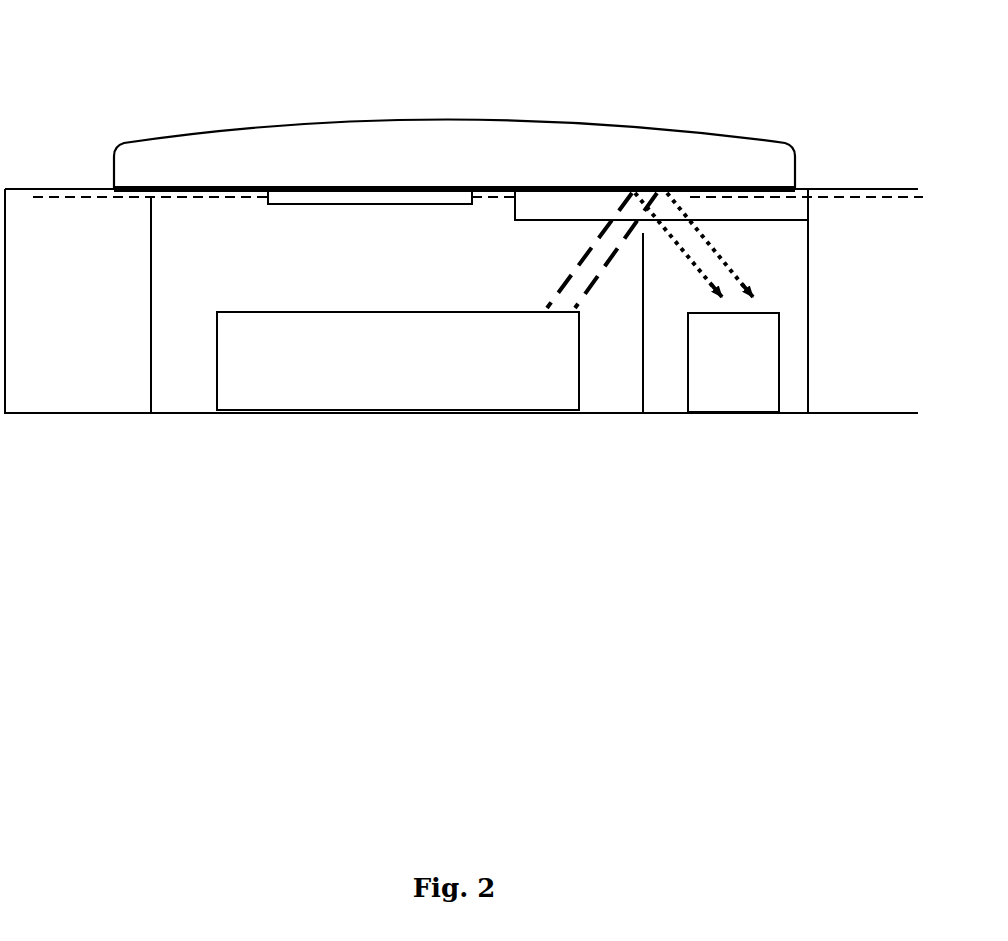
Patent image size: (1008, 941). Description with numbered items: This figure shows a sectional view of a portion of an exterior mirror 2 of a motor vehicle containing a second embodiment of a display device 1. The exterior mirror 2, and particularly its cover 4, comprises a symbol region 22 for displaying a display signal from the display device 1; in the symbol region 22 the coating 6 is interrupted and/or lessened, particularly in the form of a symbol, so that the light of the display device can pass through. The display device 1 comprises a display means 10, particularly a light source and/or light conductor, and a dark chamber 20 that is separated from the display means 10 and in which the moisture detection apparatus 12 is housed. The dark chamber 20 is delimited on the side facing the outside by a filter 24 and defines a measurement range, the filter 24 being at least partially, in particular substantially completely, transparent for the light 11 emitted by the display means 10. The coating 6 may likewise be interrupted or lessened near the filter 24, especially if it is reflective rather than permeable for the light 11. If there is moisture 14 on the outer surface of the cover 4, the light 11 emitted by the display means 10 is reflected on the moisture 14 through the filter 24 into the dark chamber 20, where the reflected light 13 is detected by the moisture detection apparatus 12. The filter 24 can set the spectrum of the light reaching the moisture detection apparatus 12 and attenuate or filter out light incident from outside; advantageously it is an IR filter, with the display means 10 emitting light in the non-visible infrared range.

The display device 1 is at (148, 403).
The exterior mirror 2 is at (66, 147).
The cover 4 is at (834, 186).
The coating 6 is at (879, 190).
The display means 10 is at (344, 411).
The light 11 is at (589, 242).
The moisture detection apparatus 12 is at (757, 406).
The reflected light 13 is at (667, 225).
The moisture 14 is at (359, 113).
The dark chamber 20 is at (677, 367).
The symbol region 22 is at (431, 199).
The filter 24 is at (755, 205).